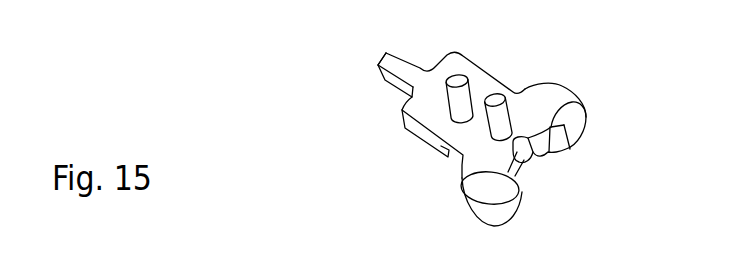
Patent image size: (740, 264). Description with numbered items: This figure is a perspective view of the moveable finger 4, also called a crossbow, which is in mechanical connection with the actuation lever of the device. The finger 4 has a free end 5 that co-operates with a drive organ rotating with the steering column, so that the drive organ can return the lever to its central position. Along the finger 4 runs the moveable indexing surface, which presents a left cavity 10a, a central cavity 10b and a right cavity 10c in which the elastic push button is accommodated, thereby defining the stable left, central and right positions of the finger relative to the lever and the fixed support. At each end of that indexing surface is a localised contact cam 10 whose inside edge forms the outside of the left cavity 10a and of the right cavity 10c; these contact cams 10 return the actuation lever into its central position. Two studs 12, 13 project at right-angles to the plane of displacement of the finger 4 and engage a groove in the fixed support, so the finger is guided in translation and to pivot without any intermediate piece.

The moveable finger 4 is at (413, 147).
The free end 5 is at (386, 52).
The contact cam 10 is at (583, 127).
The left cavity 10a is at (583, 127).
The central cavity 10b is at (526, 148).
The right cavity 10c is at (460, 173).
The stud 12 is at (459, 77).
The stud 13 is at (495, 98).